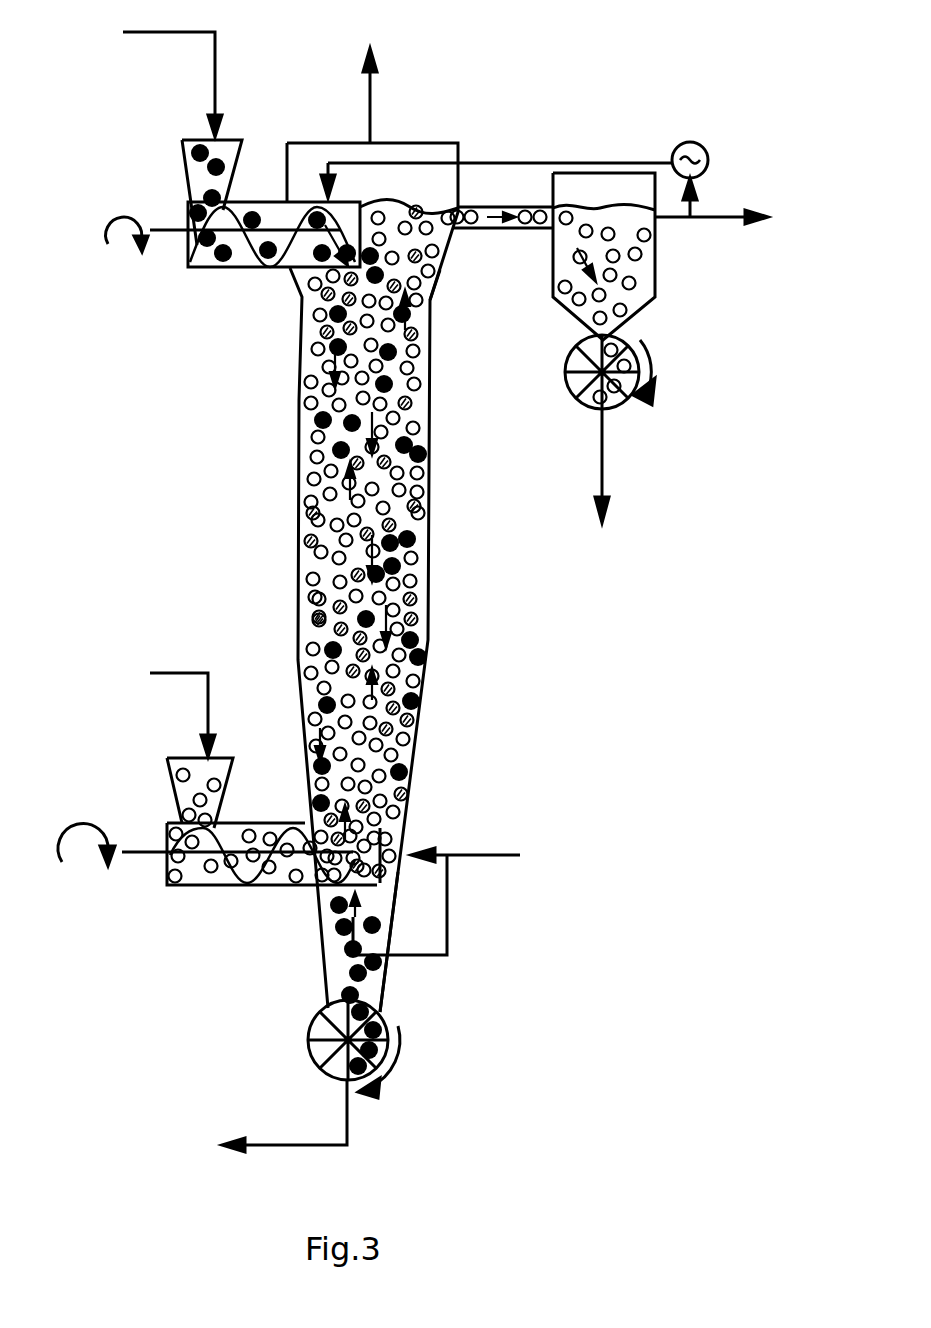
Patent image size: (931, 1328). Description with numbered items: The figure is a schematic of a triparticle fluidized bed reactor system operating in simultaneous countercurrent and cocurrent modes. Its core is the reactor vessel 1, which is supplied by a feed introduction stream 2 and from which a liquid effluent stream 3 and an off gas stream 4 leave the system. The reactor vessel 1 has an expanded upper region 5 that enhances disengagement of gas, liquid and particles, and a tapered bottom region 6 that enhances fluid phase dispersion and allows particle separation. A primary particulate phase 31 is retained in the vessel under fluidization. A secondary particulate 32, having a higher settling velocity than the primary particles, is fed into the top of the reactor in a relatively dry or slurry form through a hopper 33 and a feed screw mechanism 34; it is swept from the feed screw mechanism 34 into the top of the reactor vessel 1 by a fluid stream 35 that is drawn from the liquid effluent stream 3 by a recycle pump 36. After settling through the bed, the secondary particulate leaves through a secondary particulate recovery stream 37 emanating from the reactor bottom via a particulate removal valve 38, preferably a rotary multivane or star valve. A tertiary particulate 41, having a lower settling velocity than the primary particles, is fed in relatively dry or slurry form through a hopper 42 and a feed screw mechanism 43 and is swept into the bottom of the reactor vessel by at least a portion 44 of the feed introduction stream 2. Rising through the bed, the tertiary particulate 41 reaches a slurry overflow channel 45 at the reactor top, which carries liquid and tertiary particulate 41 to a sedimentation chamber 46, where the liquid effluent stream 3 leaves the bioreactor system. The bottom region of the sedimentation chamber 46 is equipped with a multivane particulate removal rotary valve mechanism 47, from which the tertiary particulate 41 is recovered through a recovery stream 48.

The reactor vessel 1 is at (427, 567).
The feed introduction stream 2 is at (472, 855).
The liquid effluent stream 3 is at (703, 217).
The off gas stream 4 is at (372, 120).
The expanded upper region 5 is at (437, 280).
The tapered bottom region 6 is at (422, 755).
The primary particulate phase 31 is at (300, 542).
The secondary particulate 32 is at (313, 615).
The hopper 33 is at (188, 160).
The feed screw mechanism 34 is at (233, 268).
The fluid stream 35 is at (593, 162).
The recycle pump 36 is at (703, 142).
The secondary particulate recovery stream 37 is at (297, 1145).
The particulate removal valve 38 is at (380, 1013).
The tertiary particulate 41 is at (430, 513).
The hopper 42 is at (170, 785).
The feed screw mechanism 43 is at (200, 885).
The portion of the feed stream 44 is at (447, 890).
The slurry overflow channel 45 is at (480, 228).
The sedimentation chamber 46 is at (655, 290).
The multivane particulate removal rotary valve mechanism 47 is at (623, 403).
The recovery stream 48 is at (602, 460).